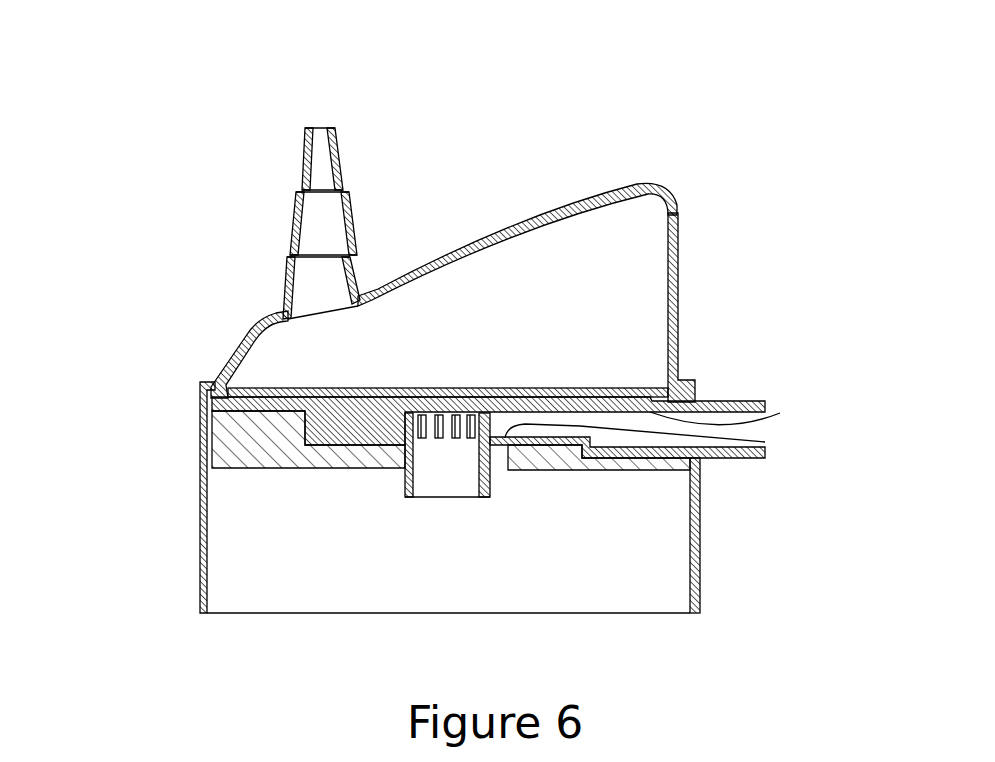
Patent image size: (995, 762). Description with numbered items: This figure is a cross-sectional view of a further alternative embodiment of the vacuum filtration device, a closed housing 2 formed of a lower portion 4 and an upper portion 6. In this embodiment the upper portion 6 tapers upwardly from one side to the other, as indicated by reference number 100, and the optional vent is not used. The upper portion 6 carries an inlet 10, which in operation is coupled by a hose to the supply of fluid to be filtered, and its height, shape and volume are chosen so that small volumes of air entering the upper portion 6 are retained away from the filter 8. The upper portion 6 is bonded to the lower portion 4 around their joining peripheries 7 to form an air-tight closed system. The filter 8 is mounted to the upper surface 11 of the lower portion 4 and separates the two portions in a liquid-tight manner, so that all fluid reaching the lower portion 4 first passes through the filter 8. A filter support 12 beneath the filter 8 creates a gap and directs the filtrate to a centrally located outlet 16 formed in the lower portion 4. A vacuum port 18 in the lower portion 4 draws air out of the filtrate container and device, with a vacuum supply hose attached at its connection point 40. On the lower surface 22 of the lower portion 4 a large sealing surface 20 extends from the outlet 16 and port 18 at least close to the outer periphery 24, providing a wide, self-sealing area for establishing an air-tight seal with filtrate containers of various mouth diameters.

The upwardly tapering upper portion 100 is at (462, 227).
The upper portion 6 is at (678, 283).
The joining peripheries 7 is at (215, 382).
The inlet 10 is at (342, 162).
The filter 8 is at (560, 390).
The upper surface 11 is at (780, 413).
The vacuum port 18 is at (765, 442).
The connection point 40 is at (742, 458).
The lower surface 22 is at (663, 467).
The filter support 12 is at (468, 440).
The outlet 16 is at (447, 473).
The sealing surface 20 is at (255, 462).
The closed housing 2 is at (464, 554).
The lower portion 4 is at (152, 553).
The outer periphery 24 is at (686, 615).